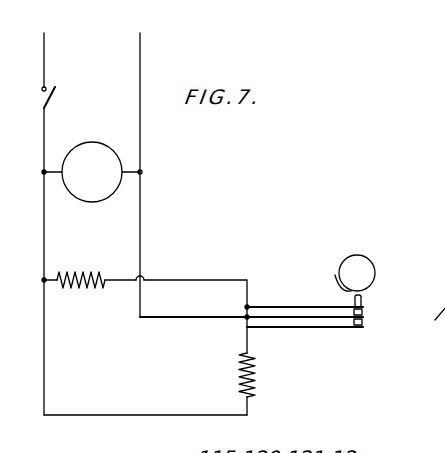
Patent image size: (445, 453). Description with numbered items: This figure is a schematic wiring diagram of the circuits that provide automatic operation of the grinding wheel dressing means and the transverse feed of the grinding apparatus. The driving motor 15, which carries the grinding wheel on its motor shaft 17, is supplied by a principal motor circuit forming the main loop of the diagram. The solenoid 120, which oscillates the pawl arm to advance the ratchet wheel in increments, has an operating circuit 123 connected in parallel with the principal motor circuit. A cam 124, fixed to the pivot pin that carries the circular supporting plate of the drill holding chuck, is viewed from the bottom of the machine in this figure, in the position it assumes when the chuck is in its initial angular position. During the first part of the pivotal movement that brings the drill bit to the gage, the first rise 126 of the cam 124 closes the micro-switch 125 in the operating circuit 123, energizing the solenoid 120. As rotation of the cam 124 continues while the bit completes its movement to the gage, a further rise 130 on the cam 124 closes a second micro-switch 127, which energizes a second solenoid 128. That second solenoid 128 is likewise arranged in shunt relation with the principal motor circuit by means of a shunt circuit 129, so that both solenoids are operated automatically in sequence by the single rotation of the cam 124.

The driving motor 15 is at (91, 142).
The motor shaft 17 is at (426, 330).
The solenoid 120 is at (77, 272).
The operating circuit 123 is at (205, 278).
The cam 124 is at (364, 271).
The micro-switch 125 is at (364, 306).
The first rise 126 is at (347, 292).
The second micro-switch 127 is at (365, 330).
The second solenoid 128 is at (257, 378).
The shunt circuit 129 is at (137, 414).
The further rise 130 is at (335, 275).